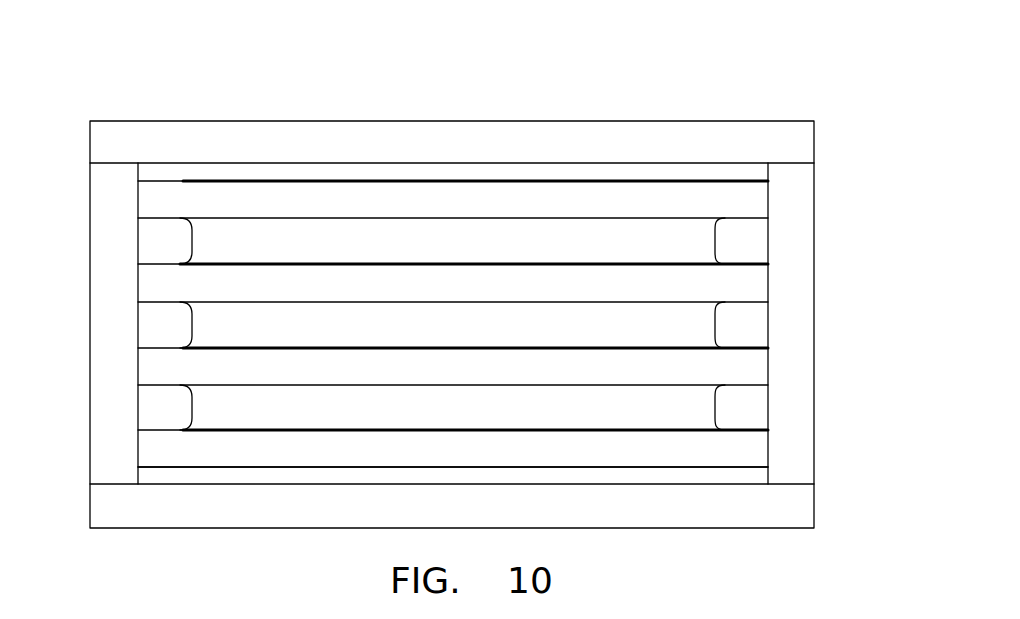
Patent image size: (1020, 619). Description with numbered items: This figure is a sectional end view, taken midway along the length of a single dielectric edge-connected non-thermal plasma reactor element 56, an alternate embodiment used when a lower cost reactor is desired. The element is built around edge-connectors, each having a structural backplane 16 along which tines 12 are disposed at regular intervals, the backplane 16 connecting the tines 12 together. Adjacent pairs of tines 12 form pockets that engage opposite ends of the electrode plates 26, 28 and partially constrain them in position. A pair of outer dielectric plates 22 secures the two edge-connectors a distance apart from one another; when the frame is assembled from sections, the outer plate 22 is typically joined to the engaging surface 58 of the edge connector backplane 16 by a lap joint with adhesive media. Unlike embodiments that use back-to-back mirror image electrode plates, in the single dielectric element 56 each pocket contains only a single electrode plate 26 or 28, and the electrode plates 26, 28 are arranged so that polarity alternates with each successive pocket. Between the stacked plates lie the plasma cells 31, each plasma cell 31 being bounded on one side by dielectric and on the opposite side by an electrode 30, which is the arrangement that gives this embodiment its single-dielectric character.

The single dielectric edge-connected element 56 is at (122, 78).
The tines 12 is at (192, 247).
The electrode 30 is at (578, 180).
The outer dielectric plate 22 is at (707, 135).
The engaging surface 58 is at (786, 160).
The structural backplane 16 is at (103, 233).
The plasma cell 31 is at (434, 252).
The electrode plate 26 is at (575, 365).
The electrode plate 28 is at (665, 448).